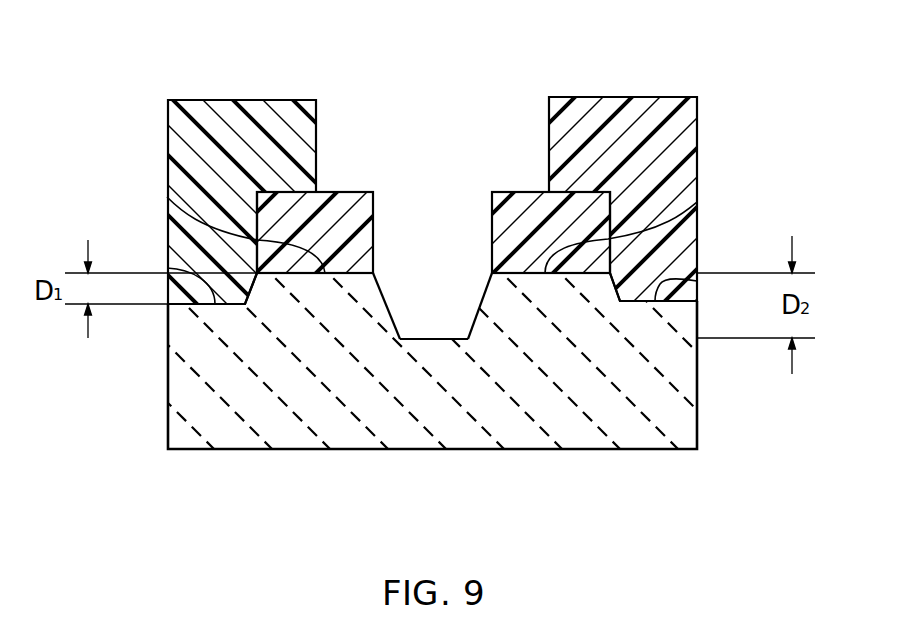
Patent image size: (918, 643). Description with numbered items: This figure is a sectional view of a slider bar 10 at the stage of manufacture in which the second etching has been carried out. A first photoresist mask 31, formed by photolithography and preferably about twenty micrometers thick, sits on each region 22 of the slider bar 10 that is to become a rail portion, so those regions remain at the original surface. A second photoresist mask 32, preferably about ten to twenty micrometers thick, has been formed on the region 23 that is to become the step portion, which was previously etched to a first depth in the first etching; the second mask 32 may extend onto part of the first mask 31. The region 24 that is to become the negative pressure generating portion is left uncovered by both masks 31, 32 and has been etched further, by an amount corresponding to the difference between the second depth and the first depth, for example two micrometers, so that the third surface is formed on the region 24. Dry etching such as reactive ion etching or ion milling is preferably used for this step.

The slider bar 10 is at (408, 460).
The region to become the rail portion 22 is at (755, 148).
The region to become the step portion 23 is at (773, 218).
The region to become the negative pressure generating portion 24 is at (428, 339).
The photoresist mask 31 is at (353, 192).
The photoresist mask 32 is at (252, 101).